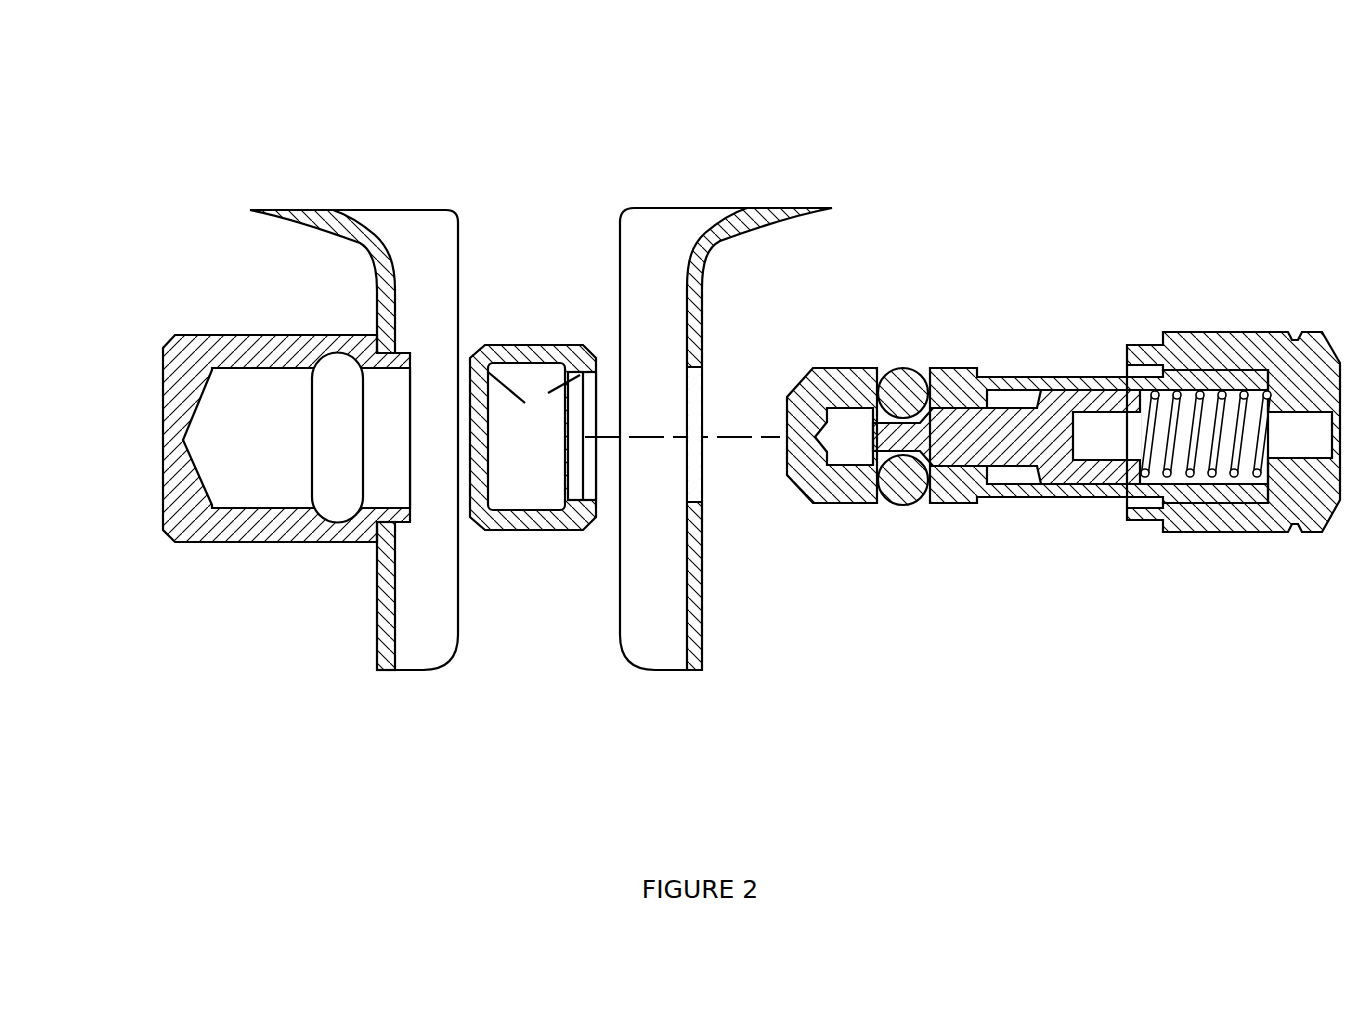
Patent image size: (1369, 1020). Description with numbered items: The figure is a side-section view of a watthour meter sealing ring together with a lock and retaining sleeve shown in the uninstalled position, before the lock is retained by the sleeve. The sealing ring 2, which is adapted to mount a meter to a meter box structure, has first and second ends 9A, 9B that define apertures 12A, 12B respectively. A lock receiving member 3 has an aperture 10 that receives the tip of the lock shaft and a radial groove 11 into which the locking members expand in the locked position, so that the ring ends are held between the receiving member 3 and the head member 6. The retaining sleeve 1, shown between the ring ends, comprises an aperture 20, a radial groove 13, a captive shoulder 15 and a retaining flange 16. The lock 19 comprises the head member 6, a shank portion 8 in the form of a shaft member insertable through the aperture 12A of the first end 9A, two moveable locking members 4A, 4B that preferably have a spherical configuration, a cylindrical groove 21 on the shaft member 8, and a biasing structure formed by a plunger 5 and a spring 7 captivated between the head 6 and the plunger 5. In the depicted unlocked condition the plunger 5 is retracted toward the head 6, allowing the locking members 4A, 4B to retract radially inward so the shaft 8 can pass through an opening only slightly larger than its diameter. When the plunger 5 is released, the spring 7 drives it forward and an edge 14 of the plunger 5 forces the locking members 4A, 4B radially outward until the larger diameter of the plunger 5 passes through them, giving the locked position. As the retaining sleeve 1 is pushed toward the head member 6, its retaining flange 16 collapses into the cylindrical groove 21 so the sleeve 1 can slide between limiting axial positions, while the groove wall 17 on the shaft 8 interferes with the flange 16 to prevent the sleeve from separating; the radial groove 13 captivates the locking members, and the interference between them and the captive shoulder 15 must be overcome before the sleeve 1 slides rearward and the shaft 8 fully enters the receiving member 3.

The retaining sleeve 1 is at (506, 471).
The sealing ring 2 is at (354, 393).
The receiving member 3 is at (271, 481).
The moveable locking member 4A is at (902, 488).
The moveable locking member 4B is at (905, 378).
The plunger 5 is at (1097, 463).
The head member 6 is at (1227, 345).
The spring 7 is at (1240, 448).
The shank portion 8 is at (845, 487).
The first end 9A is at (752, 466).
The second end 9B is at (354, 443).
The aperture 10 is at (380, 442).
The radial groove 11 is at (332, 372).
The aperture 12A is at (693, 420).
The aperture 12B is at (432, 318).
The radial groove 13 is at (527, 363).
The edge 14 is at (1030, 520).
The captive shoulder 15 is at (525, 403).
The retaining flange 16 is at (548, 393).
The groove wall 17 is at (977, 368).
The lock 19 is at (1063, 536).
The aperture 20 is at (585, 440).
The cylindrical groove 21 is at (1073, 375).